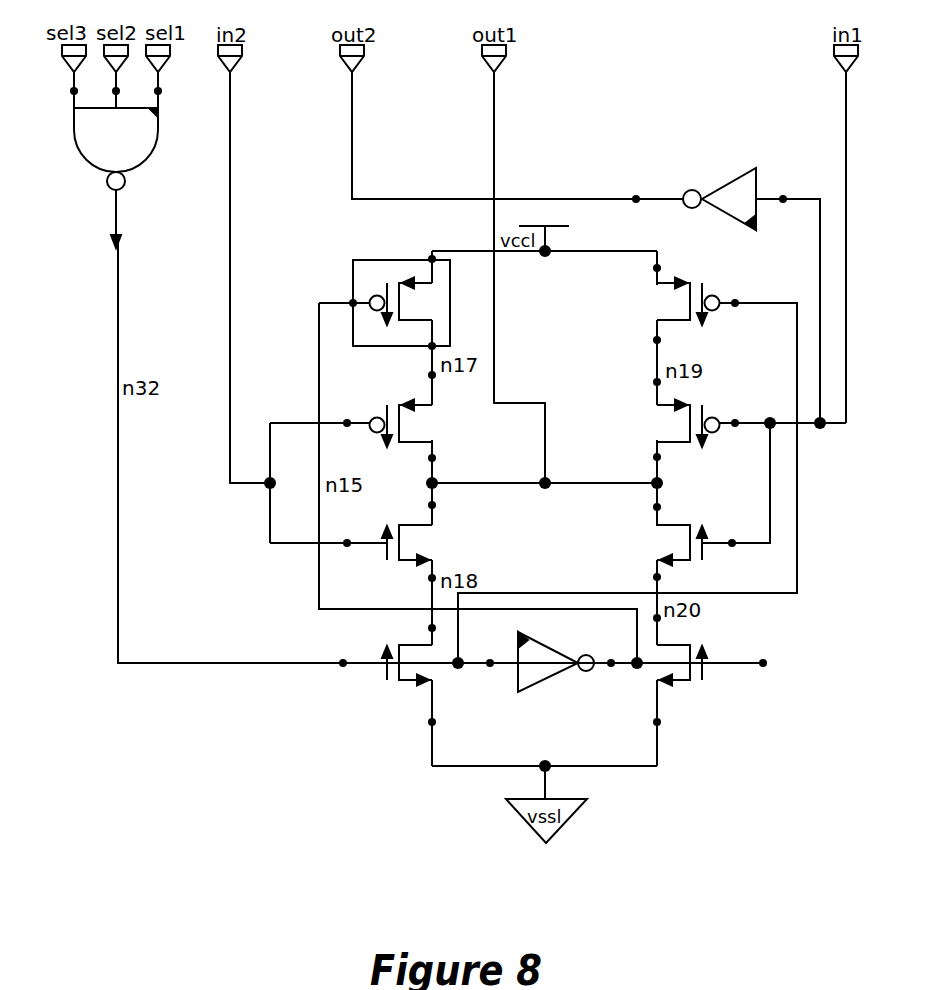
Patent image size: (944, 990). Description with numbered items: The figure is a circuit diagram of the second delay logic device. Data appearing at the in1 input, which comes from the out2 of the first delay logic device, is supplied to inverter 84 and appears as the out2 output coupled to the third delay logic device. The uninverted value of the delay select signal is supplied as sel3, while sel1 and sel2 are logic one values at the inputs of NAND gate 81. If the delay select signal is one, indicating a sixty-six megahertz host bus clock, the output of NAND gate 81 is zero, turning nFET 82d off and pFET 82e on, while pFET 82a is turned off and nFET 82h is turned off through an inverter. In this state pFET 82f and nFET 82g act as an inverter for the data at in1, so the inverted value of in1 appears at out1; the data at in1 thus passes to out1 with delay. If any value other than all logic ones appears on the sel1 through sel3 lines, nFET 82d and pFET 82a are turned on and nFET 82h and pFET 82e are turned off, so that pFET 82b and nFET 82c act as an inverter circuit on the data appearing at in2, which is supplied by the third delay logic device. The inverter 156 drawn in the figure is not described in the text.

The NAND gate 81 is at (73, 136).
The inverter 84 is at (758, 173).
The pFET 82a is at (427, 302).
The pFET 82b is at (427, 420).
The nFET 82c is at (426, 540).
The nFET 82d is at (427, 670).
The pFET 82e is at (663, 302).
The pFET 82f is at (668, 422).
The nFET 82g is at (660, 540).
The nFET 82h is at (668, 672).
The inverter 156 is at (583, 681).